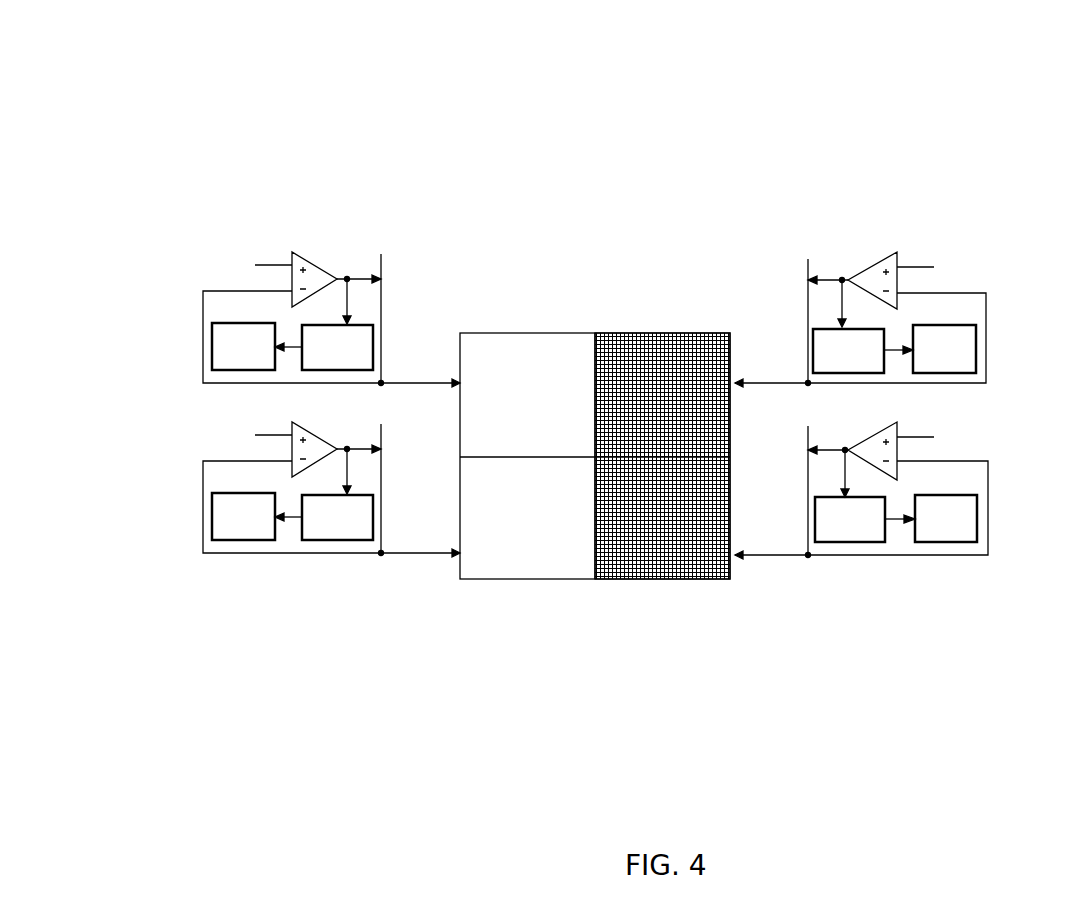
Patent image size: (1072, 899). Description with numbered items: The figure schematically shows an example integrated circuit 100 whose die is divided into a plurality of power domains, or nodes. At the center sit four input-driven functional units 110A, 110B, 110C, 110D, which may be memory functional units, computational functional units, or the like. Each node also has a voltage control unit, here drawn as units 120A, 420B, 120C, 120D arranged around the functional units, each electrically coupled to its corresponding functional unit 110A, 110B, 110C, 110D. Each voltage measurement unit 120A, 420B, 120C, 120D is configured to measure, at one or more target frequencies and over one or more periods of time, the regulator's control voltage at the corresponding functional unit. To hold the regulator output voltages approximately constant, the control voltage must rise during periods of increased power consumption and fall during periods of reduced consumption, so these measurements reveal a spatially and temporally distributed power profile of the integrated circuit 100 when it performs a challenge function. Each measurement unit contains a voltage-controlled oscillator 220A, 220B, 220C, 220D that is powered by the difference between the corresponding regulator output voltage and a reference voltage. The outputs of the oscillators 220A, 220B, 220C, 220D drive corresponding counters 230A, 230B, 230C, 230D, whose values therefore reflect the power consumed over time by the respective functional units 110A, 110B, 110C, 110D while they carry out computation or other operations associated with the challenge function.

The integrated circuit 100 is at (340, 96).
The input-driven functional unit 110A is at (505, 398).
The input-driven functional unit 110B is at (505, 521).
The input-driven functional unit 110C is at (637, 398).
The input-driven functional unit 110D is at (637, 521).
The voltage control unit 120A is at (234, 246).
The voltage regulator 420B is at (234, 413).
The voltage control unit 120C is at (999, 243).
The voltage control unit 120D is at (1000, 421).
The voltage-controlled oscillator 220A is at (317, 355).
The voltage-controlled oscillator 220B is at (317, 525).
The voltage-controlled oscillator 220C is at (828, 358).
The voltage-controlled oscillator 220D is at (829, 527).
The counter 230A is at (223, 354).
The counter 230B is at (223, 524).
The counter 230C is at (924, 356).
The counter 230D is at (925, 526).